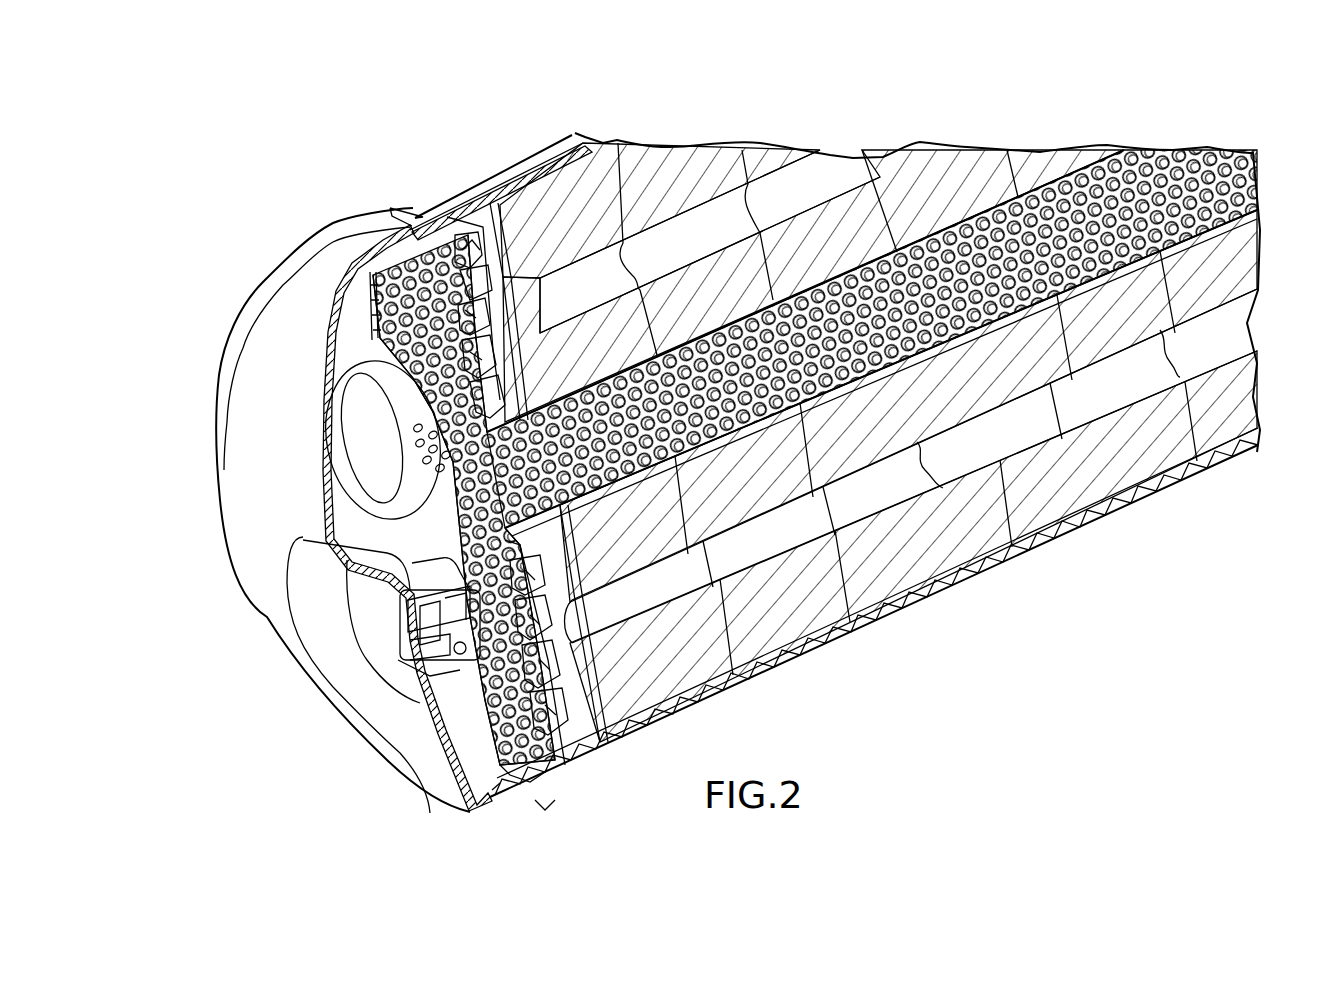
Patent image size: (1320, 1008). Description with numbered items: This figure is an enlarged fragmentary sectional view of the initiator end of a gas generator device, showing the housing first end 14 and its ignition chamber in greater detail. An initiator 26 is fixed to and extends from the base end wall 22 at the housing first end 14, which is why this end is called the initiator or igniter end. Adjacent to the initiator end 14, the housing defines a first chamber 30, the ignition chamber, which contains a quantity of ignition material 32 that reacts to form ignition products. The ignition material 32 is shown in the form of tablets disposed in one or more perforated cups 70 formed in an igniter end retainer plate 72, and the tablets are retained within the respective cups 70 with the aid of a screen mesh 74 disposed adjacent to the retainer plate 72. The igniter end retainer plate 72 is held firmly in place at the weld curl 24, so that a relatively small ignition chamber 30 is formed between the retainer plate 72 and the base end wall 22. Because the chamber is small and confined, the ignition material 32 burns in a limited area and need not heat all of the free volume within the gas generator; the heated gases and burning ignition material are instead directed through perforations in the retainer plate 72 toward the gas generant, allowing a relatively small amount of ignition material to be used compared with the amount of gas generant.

The housing first end 14 is at (262, 178).
The base end wall 22 is at (233, 463).
The weld curl 24 is at (545, 803).
The initiator 26 is at (477, 610).
The first chamber 30 is at (403, 432).
The ignition material 32 is at (418, 255).
The perforated cups 70 is at (470, 250).
The igniter end retainer plate 72 is at (583, 733).
The screen mesh 74 is at (533, 680).